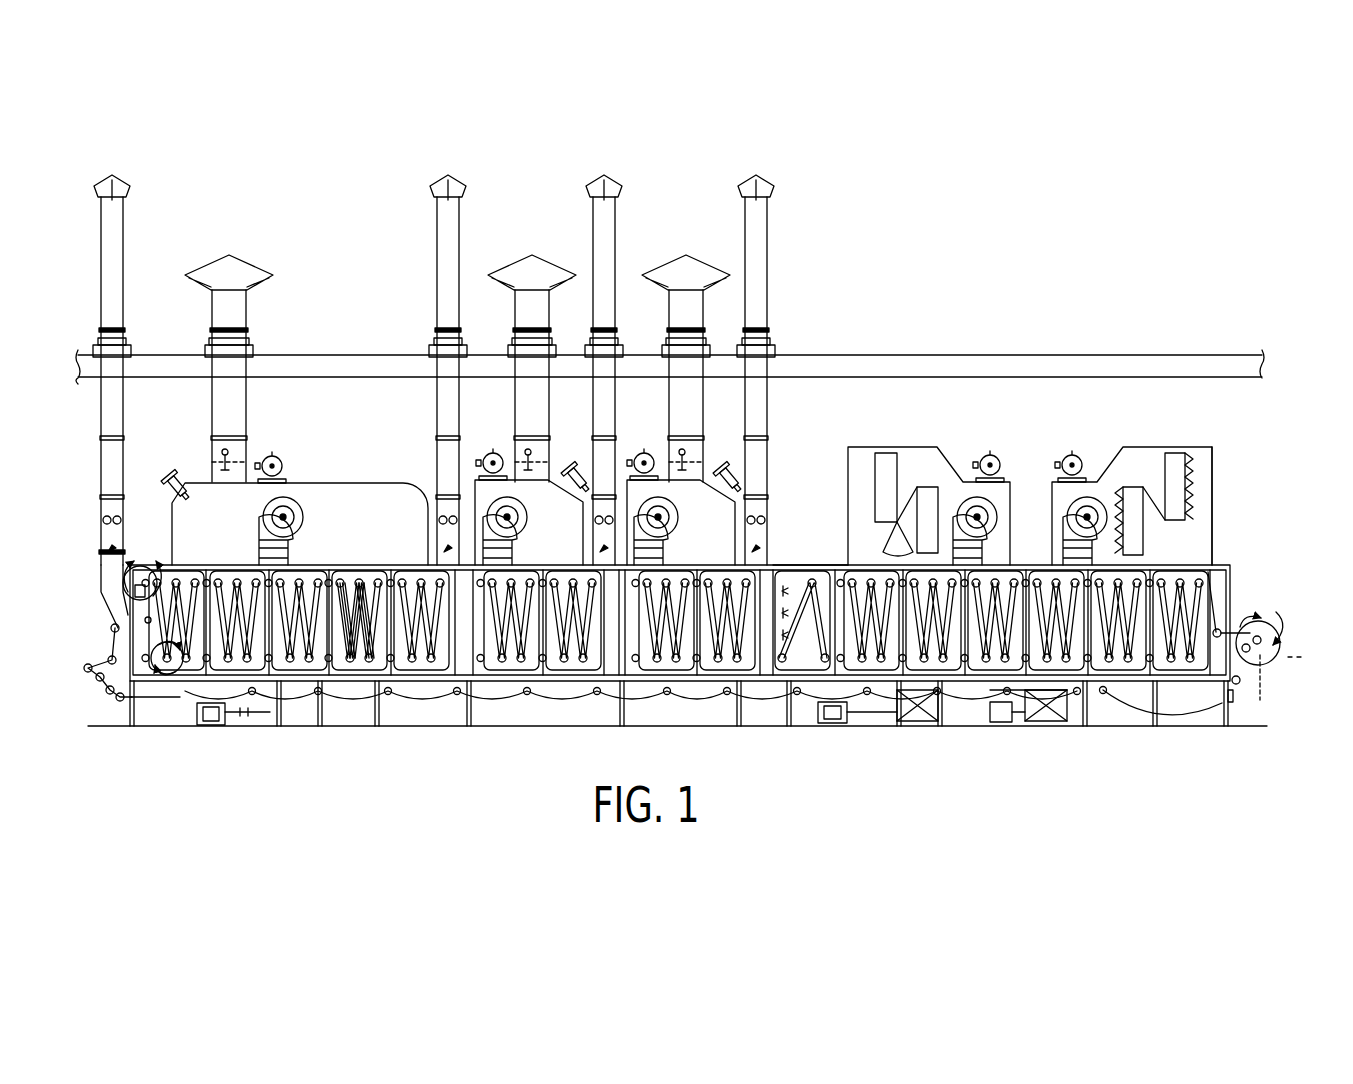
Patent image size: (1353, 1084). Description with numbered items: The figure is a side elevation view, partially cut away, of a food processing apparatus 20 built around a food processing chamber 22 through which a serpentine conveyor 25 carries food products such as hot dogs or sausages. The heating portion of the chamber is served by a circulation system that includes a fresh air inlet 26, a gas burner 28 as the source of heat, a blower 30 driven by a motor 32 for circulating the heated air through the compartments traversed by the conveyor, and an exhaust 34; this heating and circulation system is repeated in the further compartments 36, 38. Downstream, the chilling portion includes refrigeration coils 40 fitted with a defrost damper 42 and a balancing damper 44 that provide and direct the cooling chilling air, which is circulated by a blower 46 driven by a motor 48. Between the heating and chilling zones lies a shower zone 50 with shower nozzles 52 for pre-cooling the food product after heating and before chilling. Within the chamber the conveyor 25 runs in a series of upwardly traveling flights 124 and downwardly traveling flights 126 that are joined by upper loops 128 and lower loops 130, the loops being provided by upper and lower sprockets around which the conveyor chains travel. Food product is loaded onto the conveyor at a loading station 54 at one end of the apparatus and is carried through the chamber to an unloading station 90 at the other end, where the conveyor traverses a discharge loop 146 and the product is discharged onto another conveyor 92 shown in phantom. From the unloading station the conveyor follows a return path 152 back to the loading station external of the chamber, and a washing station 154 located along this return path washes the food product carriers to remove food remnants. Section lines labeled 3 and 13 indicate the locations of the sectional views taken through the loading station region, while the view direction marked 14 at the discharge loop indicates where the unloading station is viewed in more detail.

The food processing apparatus 20 is at (890, 330).
The food processing chamber 22 is at (1231, 566).
The conveyor 25 is at (1210, 590).
The fresh air inlet 26 is at (243, 313).
The exhaust 34 is at (437, 400).
The gas burner 28 is at (179, 480).
The motor 32 is at (279, 462).
The blower 30 is at (300, 512).
The compartment 36 is at (538, 548).
The compartment 38 is at (691, 545).
The refrigeration coils 40 is at (898, 468).
The defrost damper 42 is at (1192, 452).
The balancing damper 44 is at (905, 545).
The blower 46 is at (993, 503).
The motor 48 is at (992, 452).
The shower zone 50 is at (823, 562).
The shower nozzles 52 is at (786, 586).
The loading station 54 is at (105, 628).
The unloading station 90 is at (1277, 581).
The drive sprocket 14 is at (1263, 645).
The conveyor 92 is at (1291, 656).
The discharge loop 146 is at (1263, 644).
The return path 152 is at (1202, 718).
The washing station 154 is at (1045, 738).
The lower loops 130 is at (372, 660).
The upwardly traveling flights 124 is at (352, 600).
The downwardly traveling flights 126 is at (366, 640).
The upper loops 128 is at (360, 581).
The section line 3- 3 is at (146, 566).
The section line 13- 13 is at (151, 666).